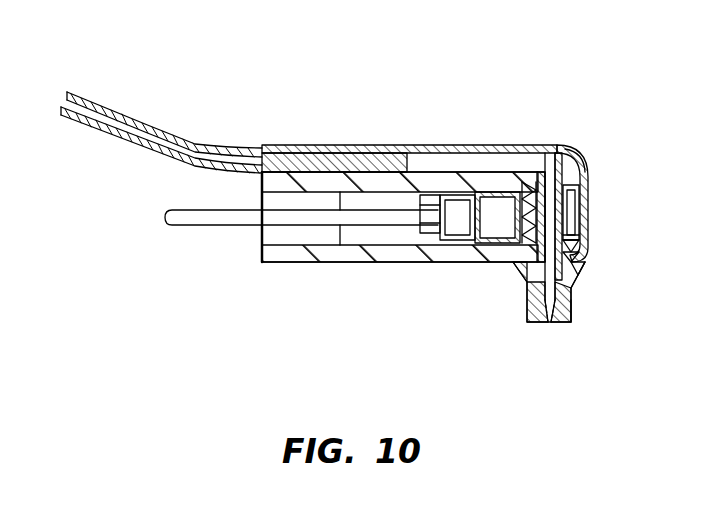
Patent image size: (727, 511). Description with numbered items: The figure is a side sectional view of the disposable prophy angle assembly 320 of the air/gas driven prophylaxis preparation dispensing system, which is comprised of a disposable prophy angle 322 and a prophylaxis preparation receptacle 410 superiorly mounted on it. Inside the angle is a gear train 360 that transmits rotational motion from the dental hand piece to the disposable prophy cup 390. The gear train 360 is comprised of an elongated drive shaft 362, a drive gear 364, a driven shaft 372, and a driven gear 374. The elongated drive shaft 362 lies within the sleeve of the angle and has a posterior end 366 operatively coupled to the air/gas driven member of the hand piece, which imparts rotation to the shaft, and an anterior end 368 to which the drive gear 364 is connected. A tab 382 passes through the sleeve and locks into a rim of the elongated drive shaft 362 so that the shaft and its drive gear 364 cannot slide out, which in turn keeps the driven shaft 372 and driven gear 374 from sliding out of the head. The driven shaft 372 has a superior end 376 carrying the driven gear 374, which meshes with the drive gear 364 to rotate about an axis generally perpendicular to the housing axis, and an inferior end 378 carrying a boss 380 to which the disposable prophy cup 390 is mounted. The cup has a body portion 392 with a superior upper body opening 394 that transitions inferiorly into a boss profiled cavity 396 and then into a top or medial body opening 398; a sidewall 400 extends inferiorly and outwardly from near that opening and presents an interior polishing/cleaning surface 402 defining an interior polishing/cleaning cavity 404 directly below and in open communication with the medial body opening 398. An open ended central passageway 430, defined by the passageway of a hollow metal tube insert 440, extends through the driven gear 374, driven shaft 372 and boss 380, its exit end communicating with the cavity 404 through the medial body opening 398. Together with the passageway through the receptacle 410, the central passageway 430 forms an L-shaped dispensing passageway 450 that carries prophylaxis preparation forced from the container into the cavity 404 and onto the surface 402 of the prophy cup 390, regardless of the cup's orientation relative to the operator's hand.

The disposable prophy angle assembly 320 is at (550, 84).
The disposable prophy angle 322 is at (180, 191).
The gear train 360 is at (496, 206).
The elongated drive shaft 362 is at (268, 264).
The drive gear 364 is at (478, 250).
The posterior end 366 is at (175, 228).
The anterior end 368 is at (505, 262).
The driven shaft 372 is at (586, 210).
The driven gear 374 is at (585, 170).
The superior end 376 is at (585, 187).
The inferior end 378 is at (585, 238).
The boss 380 is at (502, 250).
The tab 382 is at (313, 217).
The disposable prophy cup 390 is at (590, 332).
The body portion 392 is at (585, 292).
The superior upper body opening 394 is at (585, 256).
The boss profiled cavity 396 is at (585, 280).
The top or medial body opening 398 is at (540, 325).
The sidewall 400 is at (590, 318).
The interior polishing/cleaning surface 402 is at (563, 327).
The interior polishing/cleaning cavity 404 is at (545, 340).
The prophylaxis preparation receptacle 410 is at (313, 92).
The central passageway 430 is at (567, 150).
The hollow metal tube insert 440 is at (515, 265).
The L-shaped dispensing passageway 450 is at (512, 158).